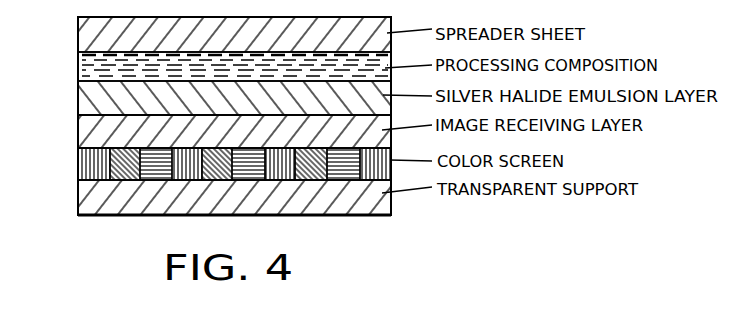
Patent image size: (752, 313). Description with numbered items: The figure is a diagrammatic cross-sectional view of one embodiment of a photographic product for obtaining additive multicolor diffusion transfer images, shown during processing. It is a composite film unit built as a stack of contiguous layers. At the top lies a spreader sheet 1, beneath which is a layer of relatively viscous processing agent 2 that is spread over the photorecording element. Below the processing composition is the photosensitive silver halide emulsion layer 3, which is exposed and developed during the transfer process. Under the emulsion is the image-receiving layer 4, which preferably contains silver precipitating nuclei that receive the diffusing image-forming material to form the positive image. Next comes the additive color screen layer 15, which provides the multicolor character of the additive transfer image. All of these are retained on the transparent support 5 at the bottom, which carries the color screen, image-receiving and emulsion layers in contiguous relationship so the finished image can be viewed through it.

The spreader sheet 1 is at (93, 36).
The processing agent 2 is at (88, 72).
The silver halide emulsion layer 3 is at (92, 99).
The image-receiving layer 4 is at (90, 130).
The additive color screen layer 15 is at (80, 165).
The transparent support 5 is at (87, 197).